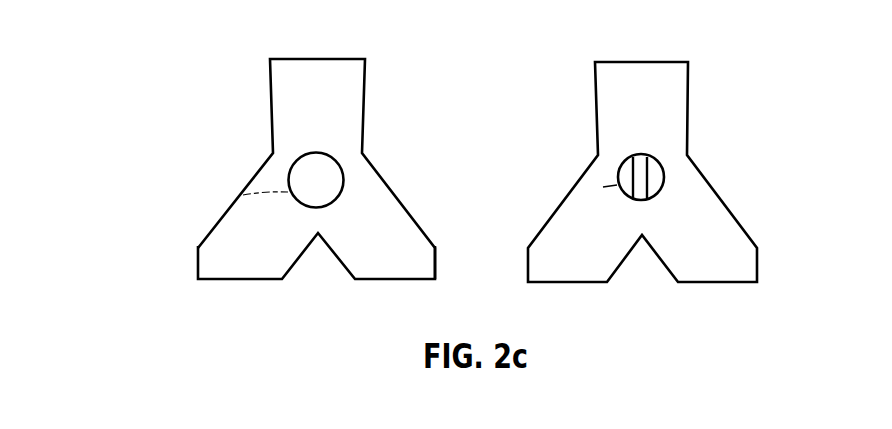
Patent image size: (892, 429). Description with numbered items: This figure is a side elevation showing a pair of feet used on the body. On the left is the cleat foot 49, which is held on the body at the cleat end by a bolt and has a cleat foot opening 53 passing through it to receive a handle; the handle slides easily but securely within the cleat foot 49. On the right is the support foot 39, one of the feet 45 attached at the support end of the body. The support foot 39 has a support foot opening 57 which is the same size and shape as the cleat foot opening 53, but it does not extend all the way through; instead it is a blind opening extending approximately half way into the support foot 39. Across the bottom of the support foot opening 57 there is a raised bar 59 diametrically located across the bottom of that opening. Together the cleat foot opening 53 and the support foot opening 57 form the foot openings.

The support foot 39 is at (598, 111).
The feet 45 is at (198, 280).
The cleat foot 49 is at (270, 95).
The cleat foot opening 53 is at (346, 181).
The support foot opening 57 is at (662, 193).
The raised bar 59 is at (647, 172).